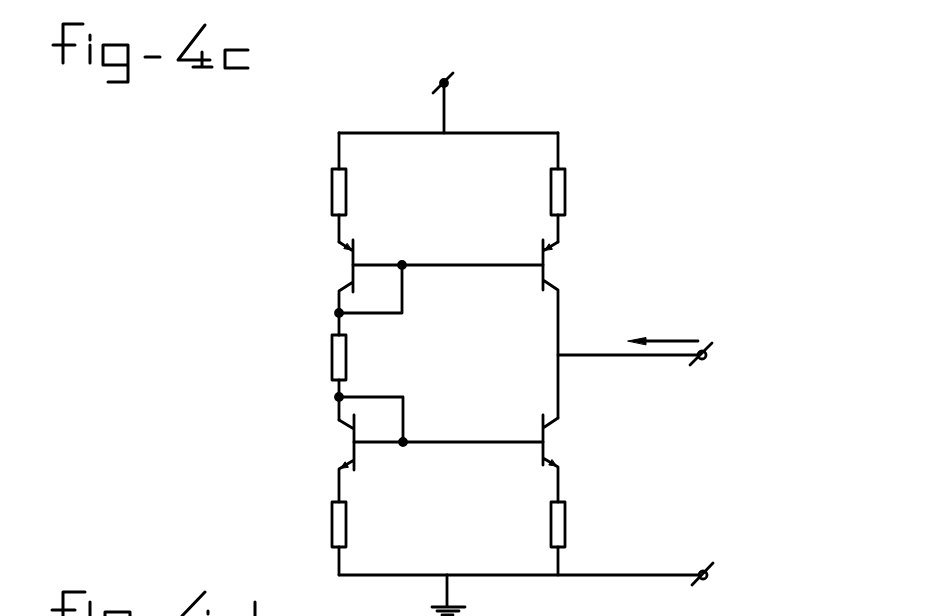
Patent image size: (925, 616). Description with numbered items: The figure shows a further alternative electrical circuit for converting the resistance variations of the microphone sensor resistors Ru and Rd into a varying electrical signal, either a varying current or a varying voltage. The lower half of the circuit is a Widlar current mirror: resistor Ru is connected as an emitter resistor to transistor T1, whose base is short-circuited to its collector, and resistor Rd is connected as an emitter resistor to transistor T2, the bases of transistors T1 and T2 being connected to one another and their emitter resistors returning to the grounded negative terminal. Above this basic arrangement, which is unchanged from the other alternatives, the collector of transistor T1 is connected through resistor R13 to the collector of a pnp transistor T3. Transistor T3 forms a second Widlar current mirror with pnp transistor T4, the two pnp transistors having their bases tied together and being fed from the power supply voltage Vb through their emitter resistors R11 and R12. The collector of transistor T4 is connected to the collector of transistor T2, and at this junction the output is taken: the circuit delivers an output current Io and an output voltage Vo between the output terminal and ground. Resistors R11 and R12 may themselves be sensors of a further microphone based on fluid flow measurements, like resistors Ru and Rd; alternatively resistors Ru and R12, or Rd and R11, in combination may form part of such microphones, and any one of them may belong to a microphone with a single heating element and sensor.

The resistor R11 is at (319, 187).
The resistor R12 is at (582, 187).
The resistor R13 is at (319, 377).
The resistor Ru is at (319, 538).
The resistor Rd is at (578, 538).
The transistor T1 is at (334, 458).
The transistor T2 is at (563, 458).
The pnp transistor T3 is at (332, 287).
The pnp transistor T4 is at (563, 329).
The power supply voltage Vb is at (448, 90).
The output voltage Vo is at (539, 463).
The output current Io is at (663, 325).